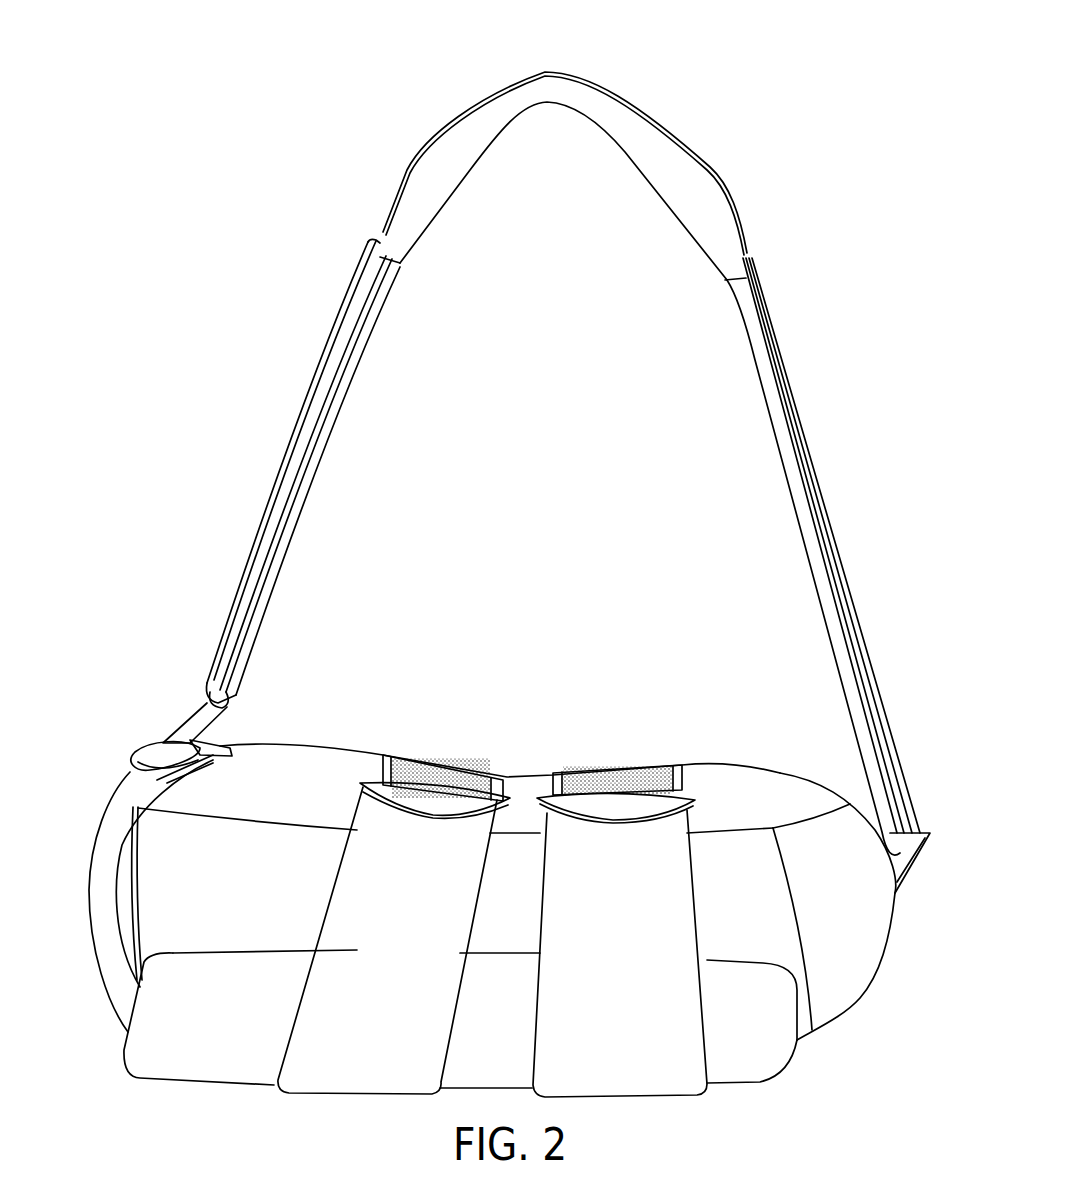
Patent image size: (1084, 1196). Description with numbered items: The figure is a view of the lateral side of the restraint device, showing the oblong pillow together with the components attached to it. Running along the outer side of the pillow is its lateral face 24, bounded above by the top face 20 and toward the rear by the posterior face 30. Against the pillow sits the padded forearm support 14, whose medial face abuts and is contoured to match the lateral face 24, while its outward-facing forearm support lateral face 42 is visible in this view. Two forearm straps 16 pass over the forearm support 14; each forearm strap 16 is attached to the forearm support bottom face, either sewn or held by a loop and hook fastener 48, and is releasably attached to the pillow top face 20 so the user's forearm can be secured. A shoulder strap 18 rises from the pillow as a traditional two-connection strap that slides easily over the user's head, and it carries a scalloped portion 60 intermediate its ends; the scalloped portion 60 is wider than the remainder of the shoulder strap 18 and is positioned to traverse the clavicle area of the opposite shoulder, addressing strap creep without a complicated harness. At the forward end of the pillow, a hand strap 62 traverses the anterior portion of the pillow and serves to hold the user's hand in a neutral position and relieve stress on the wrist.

The padded forearm support 14 is at (745, 1104).
The forearm strap 16 is at (362, 1085).
The shoulder strap 18 is at (290, 351).
The top face 20 is at (308, 760).
The lateral face 24 is at (276, 893).
The posterior face 30 is at (868, 960).
The forearm support lateral face 42 is at (507, 1033).
The loop and hook fastener 48 is at (443, 768).
The scalloped portion 60 is at (661, 70).
The hand strap 62 is at (120, 790).